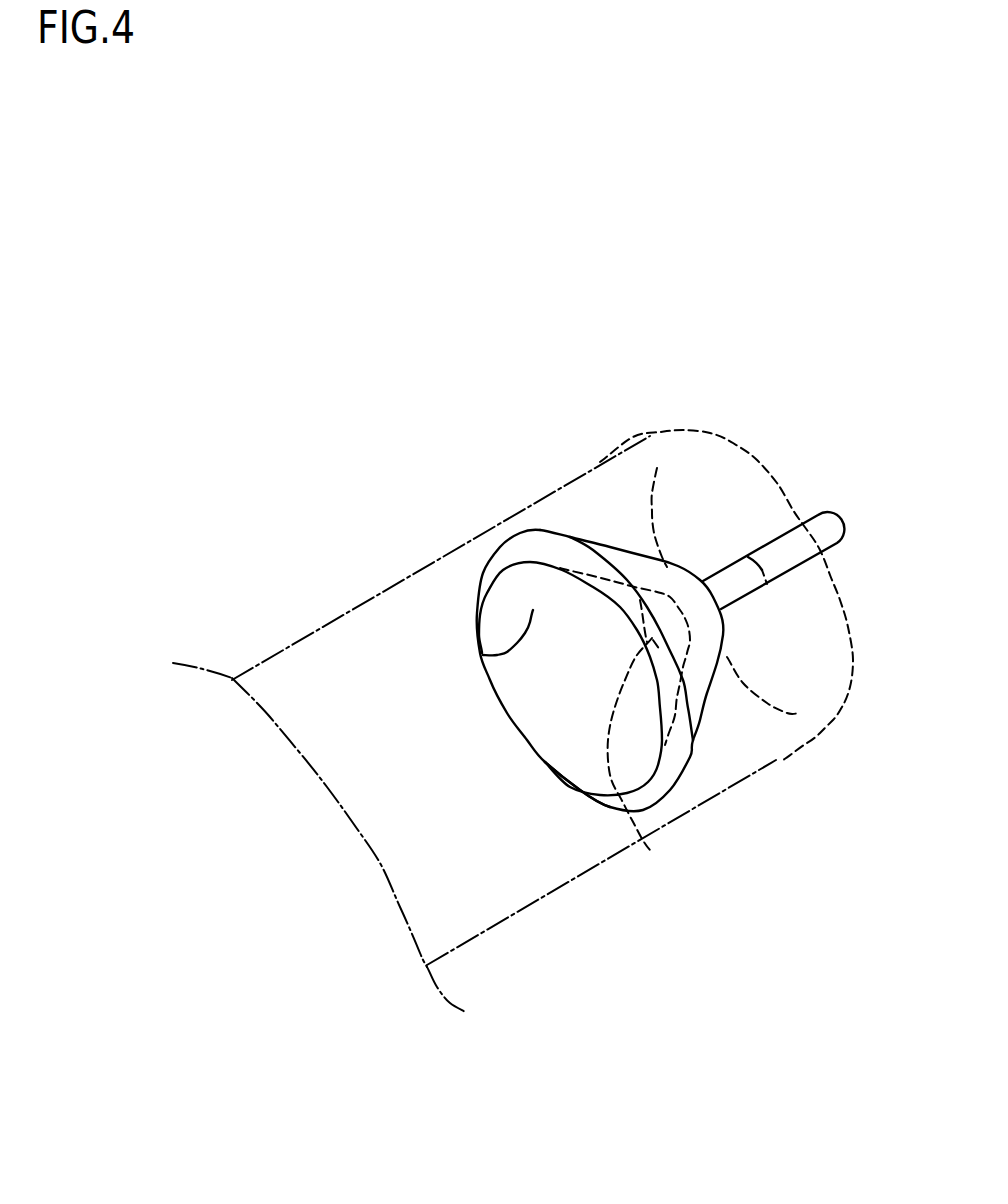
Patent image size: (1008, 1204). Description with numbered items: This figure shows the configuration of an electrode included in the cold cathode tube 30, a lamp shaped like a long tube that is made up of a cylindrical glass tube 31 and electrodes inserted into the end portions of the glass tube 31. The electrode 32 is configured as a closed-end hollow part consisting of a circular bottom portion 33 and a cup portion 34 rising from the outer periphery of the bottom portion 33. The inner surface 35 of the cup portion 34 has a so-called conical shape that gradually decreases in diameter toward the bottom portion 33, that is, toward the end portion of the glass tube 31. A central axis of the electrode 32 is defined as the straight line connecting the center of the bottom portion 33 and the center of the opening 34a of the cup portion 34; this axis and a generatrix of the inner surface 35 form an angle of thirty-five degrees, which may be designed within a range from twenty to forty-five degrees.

The cold cathode tube 30 is at (647, 325).
The glass tube 31 is at (628, 447).
The electrode 32 is at (707, 710).
The bottom portion 33 is at (650, 850).
The cup portion 34 is at (542, 547).
The opening 34a is at (598, 797).
The inner surface 35 is at (483, 657).